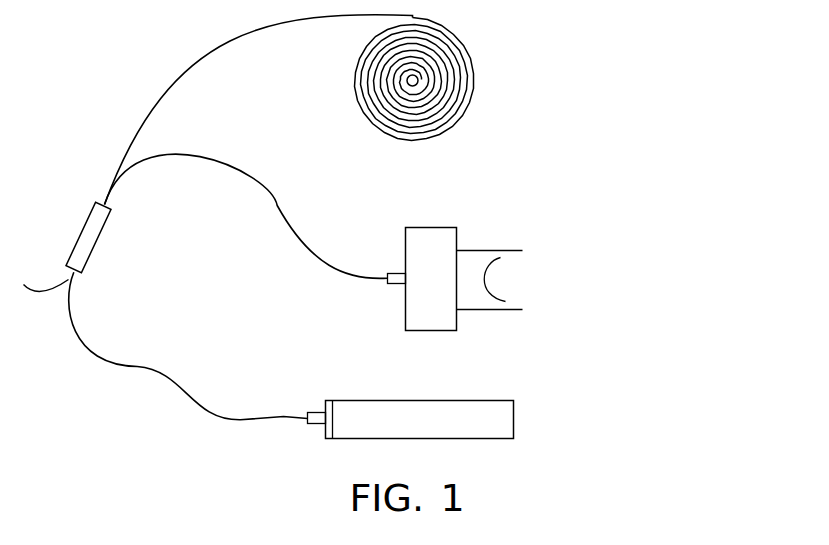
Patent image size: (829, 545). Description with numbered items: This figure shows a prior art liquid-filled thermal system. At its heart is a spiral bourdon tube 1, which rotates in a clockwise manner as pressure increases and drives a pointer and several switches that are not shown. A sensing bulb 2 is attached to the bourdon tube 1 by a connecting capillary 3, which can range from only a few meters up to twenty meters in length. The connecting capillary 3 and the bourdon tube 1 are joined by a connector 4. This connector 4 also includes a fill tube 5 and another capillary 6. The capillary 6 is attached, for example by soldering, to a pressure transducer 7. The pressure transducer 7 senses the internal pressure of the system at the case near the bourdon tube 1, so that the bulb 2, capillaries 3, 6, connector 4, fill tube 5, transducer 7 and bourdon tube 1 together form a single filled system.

The spiral bourdon tube 1 is at (463, 40).
The sensing bulb 2 is at (422, 399).
The connecting capillary 3 is at (177, 383).
The connector 4 is at (107, 227).
The fill tube 5 is at (52, 287).
The capillary 6 is at (298, 233).
The pressure transducer 7 is at (430, 330).